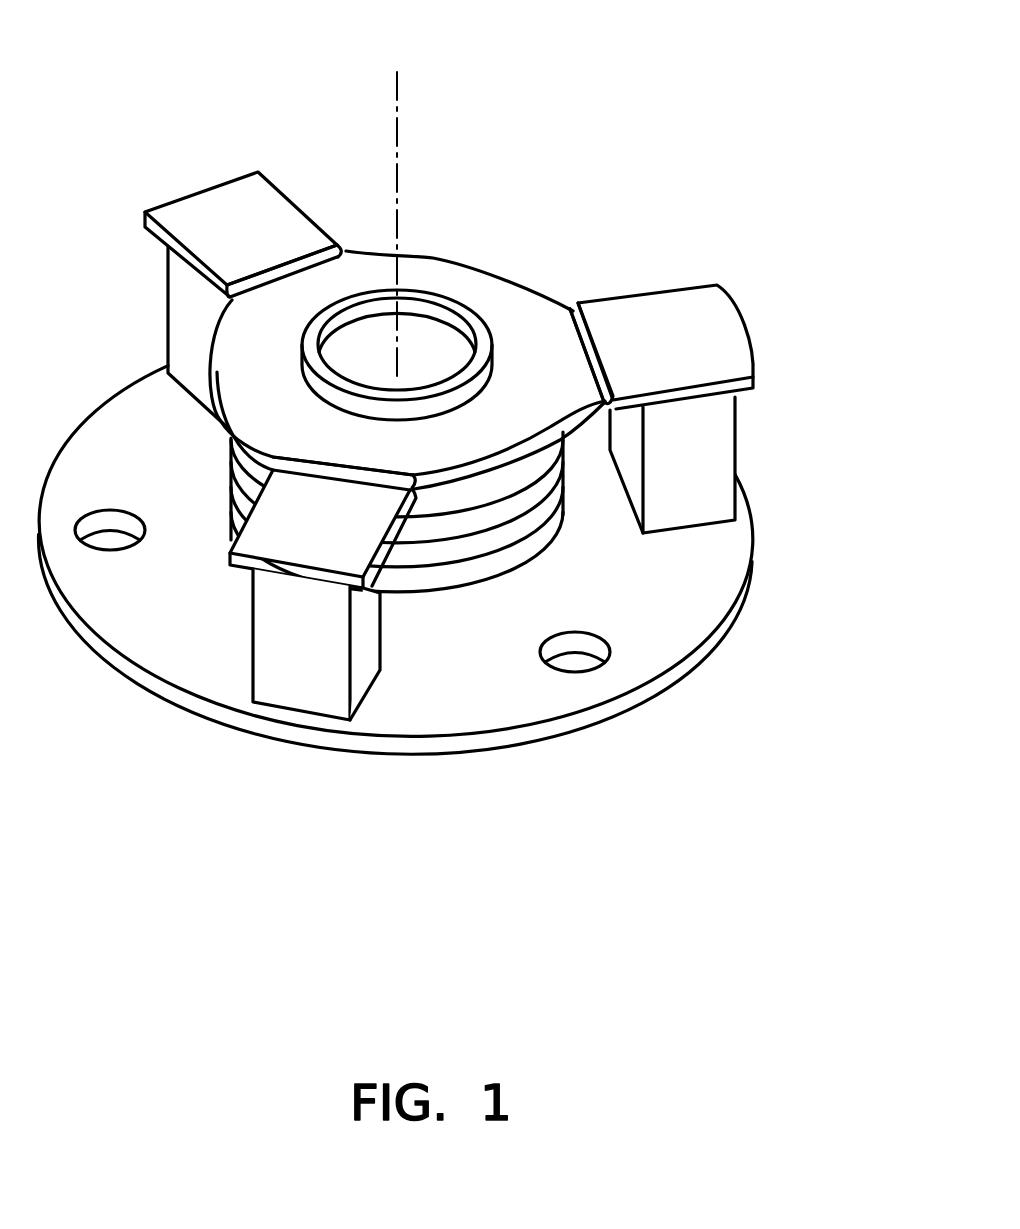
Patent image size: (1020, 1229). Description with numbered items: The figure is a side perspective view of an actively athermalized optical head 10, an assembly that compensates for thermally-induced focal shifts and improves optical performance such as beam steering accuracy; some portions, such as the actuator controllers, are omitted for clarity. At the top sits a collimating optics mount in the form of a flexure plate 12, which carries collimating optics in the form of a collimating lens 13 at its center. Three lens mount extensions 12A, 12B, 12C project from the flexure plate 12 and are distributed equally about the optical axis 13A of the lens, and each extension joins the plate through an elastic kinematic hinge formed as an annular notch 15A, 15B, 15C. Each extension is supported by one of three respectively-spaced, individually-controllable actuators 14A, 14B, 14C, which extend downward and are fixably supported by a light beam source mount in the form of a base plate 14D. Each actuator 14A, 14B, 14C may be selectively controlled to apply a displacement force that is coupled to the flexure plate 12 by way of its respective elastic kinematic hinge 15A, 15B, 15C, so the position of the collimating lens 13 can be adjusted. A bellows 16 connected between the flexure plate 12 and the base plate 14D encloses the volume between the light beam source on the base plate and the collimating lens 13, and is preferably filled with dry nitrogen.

The actively athermalized optical head 10 is at (431, 409).
The flexure plate 12 is at (503, 287).
The lens mount extension 12A is at (220, 197).
The lens mount extension 12B is at (723, 330).
The lens mount extension 12C is at (263, 543).
The collimating lens 13 is at (437, 371).
The optical axis 13A is at (400, 165).
The actuator 14A is at (180, 300).
The actuator 14B is at (727, 432).
The actuator 14C is at (337, 640).
The base plate 14D is at (563, 720).
The annular notch 15A is at (360, 214).
The annular notch 15B is at (583, 266).
The annular notch 15C is at (342, 453).
The bellows 16 is at (497, 568).